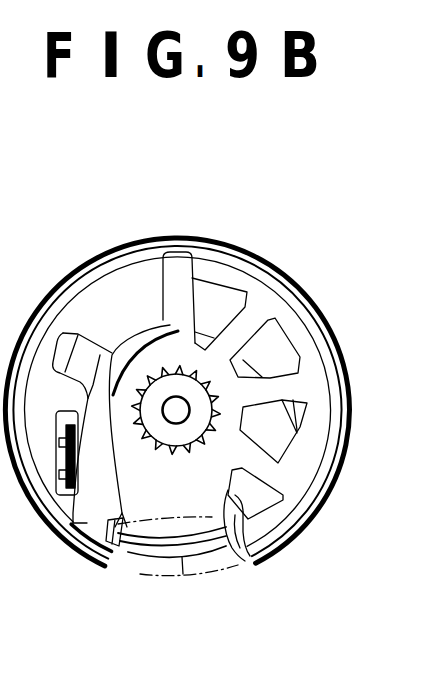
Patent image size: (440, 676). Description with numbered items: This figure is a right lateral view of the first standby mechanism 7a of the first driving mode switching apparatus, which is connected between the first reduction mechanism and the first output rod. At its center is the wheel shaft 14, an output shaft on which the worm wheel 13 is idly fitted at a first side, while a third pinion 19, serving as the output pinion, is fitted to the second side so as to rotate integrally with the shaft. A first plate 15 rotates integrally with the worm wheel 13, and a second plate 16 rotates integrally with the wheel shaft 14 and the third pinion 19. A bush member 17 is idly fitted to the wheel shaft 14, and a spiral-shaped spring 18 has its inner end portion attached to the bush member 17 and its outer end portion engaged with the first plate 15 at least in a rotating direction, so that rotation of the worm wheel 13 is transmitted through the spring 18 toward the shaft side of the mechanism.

The first standby mechanism 7a is at (342, 219).
The worm wheel 13 is at (99, 246).
The wheel shaft 14 is at (167, 420).
The first plate 15 is at (183, 560).
The second plate 16 is at (135, 563).
The bush member 17 is at (90, 523).
The spiral-shaped spring 18 is at (242, 570).
The third pinion 19 is at (193, 447).